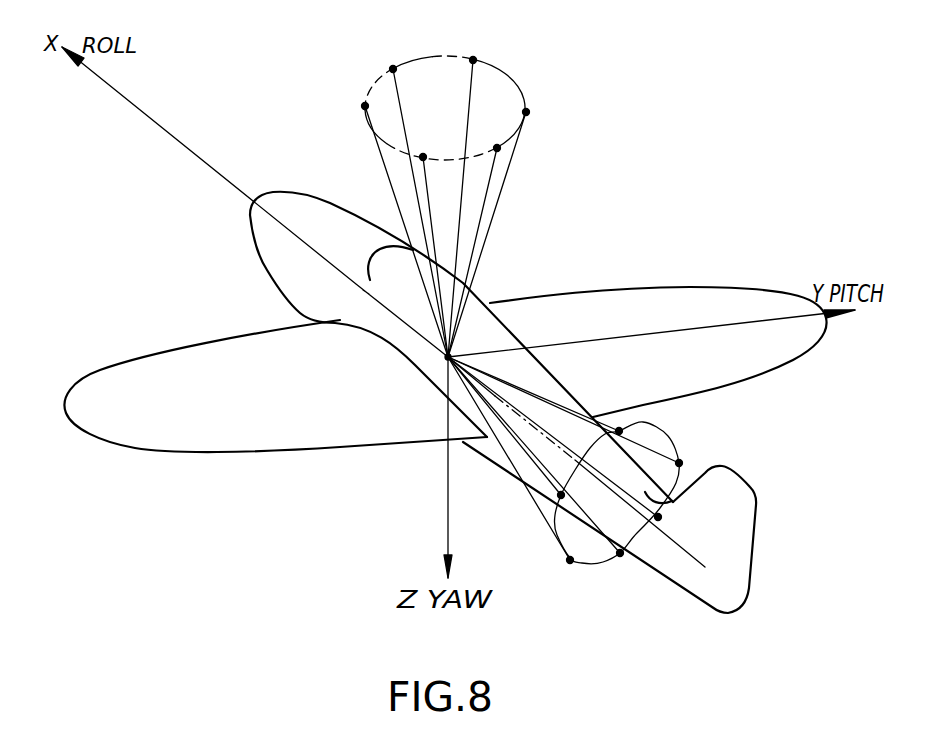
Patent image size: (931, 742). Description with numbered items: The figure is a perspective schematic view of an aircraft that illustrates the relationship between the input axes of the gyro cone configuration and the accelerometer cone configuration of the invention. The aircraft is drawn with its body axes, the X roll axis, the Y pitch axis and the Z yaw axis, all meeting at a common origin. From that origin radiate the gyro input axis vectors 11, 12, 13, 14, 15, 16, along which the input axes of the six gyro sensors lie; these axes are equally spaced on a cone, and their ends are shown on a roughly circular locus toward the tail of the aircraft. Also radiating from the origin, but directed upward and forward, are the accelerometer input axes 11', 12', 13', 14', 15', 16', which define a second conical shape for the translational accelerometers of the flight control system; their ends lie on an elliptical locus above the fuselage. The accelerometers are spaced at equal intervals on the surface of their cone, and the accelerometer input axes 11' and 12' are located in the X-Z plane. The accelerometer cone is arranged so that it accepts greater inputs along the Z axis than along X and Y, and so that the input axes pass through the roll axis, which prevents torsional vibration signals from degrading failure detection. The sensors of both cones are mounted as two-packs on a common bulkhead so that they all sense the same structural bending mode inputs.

The gyro input axis vector 11 is at (538, 473).
The gyro input axis vector 12 is at (543, 396).
The gyro input axis vector 13 is at (511, 478).
The gyro input axis vector 14 is at (577, 413).
The gyro input axis vector 15 is at (567, 445).
The gyro input axis vector 16 is at (506, 435).
The accelerometer input axis 11' is at (480, 235).
The accelerometer input axis 12' is at (415, 194).
The accelerometer input axis 13' is at (433, 242).
The accelerometer input axis 14' is at (475, 191).
The accelerometer input axis 15' is at (510, 225).
The accelerometer input axis 16' is at (387, 223).